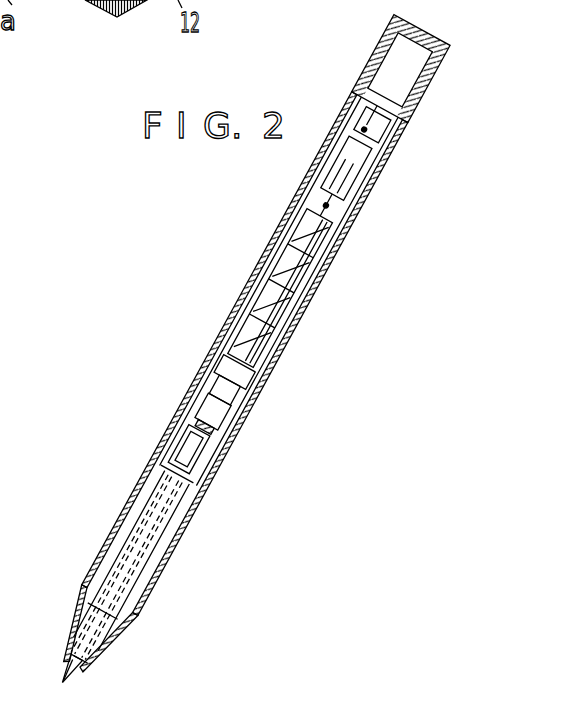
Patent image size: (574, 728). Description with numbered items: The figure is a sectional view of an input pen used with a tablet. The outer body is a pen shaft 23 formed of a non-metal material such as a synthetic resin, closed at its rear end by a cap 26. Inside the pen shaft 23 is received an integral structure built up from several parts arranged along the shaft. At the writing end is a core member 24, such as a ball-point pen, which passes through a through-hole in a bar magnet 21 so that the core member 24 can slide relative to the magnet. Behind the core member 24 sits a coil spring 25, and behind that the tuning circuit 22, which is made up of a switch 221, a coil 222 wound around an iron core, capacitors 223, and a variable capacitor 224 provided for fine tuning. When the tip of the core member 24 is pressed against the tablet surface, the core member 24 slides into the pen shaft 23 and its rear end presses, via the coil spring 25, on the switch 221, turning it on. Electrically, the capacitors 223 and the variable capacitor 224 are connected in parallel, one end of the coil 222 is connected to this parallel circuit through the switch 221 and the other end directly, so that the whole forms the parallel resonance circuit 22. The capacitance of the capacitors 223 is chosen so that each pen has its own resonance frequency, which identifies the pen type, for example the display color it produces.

The bar magnet 21 is at (132, 544).
The tuning circuit 22 is at (339, 269).
The switch 221 is at (237, 419).
The coil 222 is at (283, 288).
The capacitors 223 is at (340, 173).
The variable capacitor 224 is at (398, 108).
The pen shaft 23 is at (256, 269).
The core member 24 is at (82, 644).
The coil spring 25 is at (203, 463).
The cap 26 is at (429, 36).